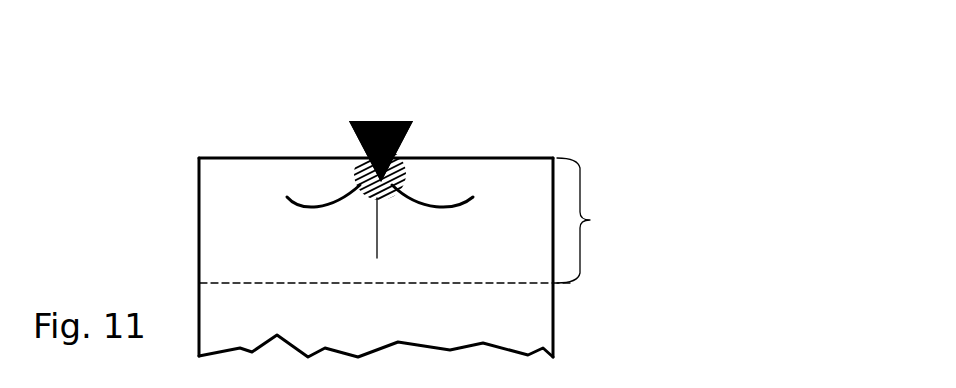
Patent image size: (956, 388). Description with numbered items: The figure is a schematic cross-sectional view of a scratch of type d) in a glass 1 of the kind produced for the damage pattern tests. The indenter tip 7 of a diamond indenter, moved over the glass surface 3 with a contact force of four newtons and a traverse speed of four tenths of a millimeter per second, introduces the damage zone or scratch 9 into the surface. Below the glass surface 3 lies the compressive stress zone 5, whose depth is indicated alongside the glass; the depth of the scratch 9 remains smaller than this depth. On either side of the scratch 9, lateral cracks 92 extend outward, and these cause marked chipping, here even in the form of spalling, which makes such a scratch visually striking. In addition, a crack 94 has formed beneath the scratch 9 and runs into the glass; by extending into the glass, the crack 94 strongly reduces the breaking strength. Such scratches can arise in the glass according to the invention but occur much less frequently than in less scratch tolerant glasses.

The component 1 is at (176, 154).
The glass surface 3 is at (510, 156).
The compressive stress zone 5 is at (591, 220).
The indenter tip 7 is at (405, 140).
The scratch 9 is at (357, 153).
The lateral cracks 92 is at (327, 200).
The crack 94 is at (375, 225).